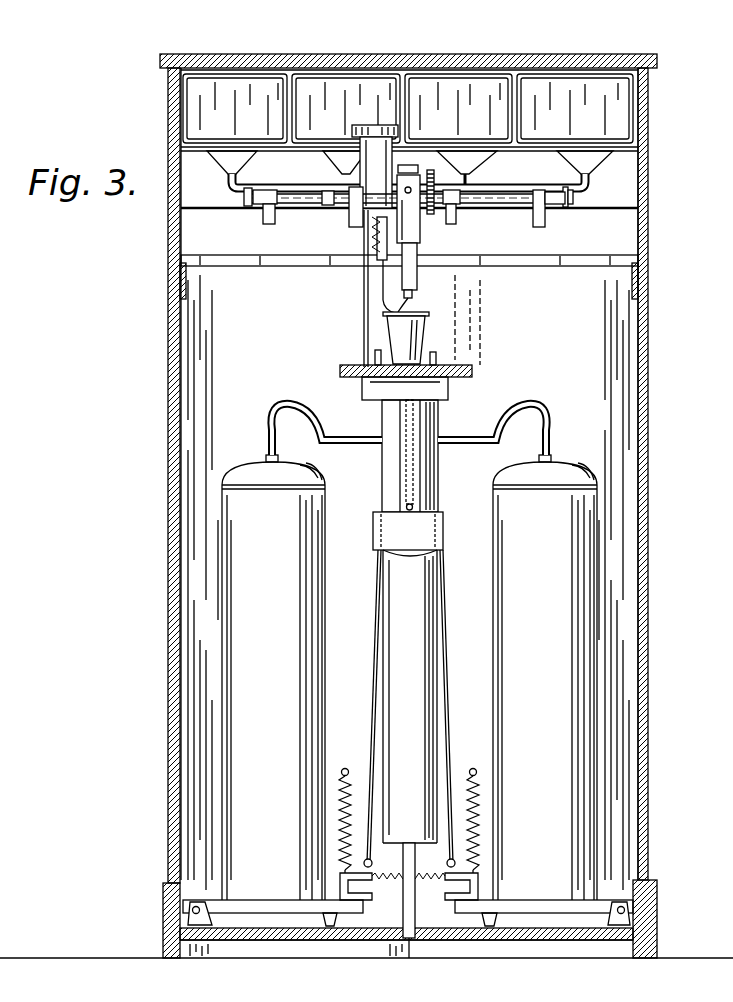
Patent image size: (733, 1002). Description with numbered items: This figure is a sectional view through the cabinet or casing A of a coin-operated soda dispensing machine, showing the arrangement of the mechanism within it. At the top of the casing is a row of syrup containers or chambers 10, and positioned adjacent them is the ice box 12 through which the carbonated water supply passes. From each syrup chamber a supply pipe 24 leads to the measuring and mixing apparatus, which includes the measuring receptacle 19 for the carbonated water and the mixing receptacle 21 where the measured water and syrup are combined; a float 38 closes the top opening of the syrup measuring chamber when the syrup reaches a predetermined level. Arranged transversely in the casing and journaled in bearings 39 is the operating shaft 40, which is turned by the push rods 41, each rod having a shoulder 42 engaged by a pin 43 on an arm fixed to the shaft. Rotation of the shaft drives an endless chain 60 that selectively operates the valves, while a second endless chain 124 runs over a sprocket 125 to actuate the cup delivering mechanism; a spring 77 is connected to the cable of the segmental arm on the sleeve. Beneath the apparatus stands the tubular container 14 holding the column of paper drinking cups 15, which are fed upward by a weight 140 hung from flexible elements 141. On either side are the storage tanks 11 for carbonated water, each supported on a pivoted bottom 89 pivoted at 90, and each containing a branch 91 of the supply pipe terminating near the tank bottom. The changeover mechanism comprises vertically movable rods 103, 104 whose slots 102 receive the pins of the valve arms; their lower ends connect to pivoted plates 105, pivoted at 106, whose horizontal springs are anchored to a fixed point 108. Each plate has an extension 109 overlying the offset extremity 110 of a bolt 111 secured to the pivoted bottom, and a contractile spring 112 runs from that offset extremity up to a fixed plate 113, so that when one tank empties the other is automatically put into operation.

The syrup containers or chambers 10 is at (380, 90).
The ice box 12 is at (614, 186).
The measuring receptacle for the carbonated water 19 is at (375, 166).
The supply pipe 24 is at (293, 190).
The bearings 39 is at (254, 206).
The push rods 41 is at (274, 224).
The operating shaft 40 is at (331, 205).
The sprocket 125 is at (354, 226).
The endless chain 60 is at (433, 216).
The pin 43 is at (536, 214).
The shoulder 42 is at (542, 206).
The mixing receptacle 21 is at (421, 276).
The float 38 is at (412, 286).
The spring 77 is at (365, 263).
The endless chain 124 is at (364, 288).
The paper drinking cups 15 is at (400, 330).
The flexible elements 141 is at (412, 468).
The weight 140 is at (408, 531).
The tubular container 14 is at (410, 696).
The vertically movable rod 104 is at (372, 712).
The vertically movable rod 103 is at (447, 721).
The pivoted plates 105 is at (362, 888).
The pivot 106 is at (428, 874).
The fixed point 108 is at (410, 855).
The slot 102 is at (410, 942).
The fixed plate 113 is at (345, 769).
The contractile spring 112 is at (338, 795).
The extension 109 is at (477, 817).
The offset extremity 110 is at (480, 853).
The bolt 111 is at (480, 886).
The pivoted bottom 89 is at (259, 900).
The pivot 90 is at (197, 902).
The storage tanks 11 is at (409, 677).
The branch of the supply pipe 91 is at (312, 425).
The cabinet or casing A is at (645, 403).